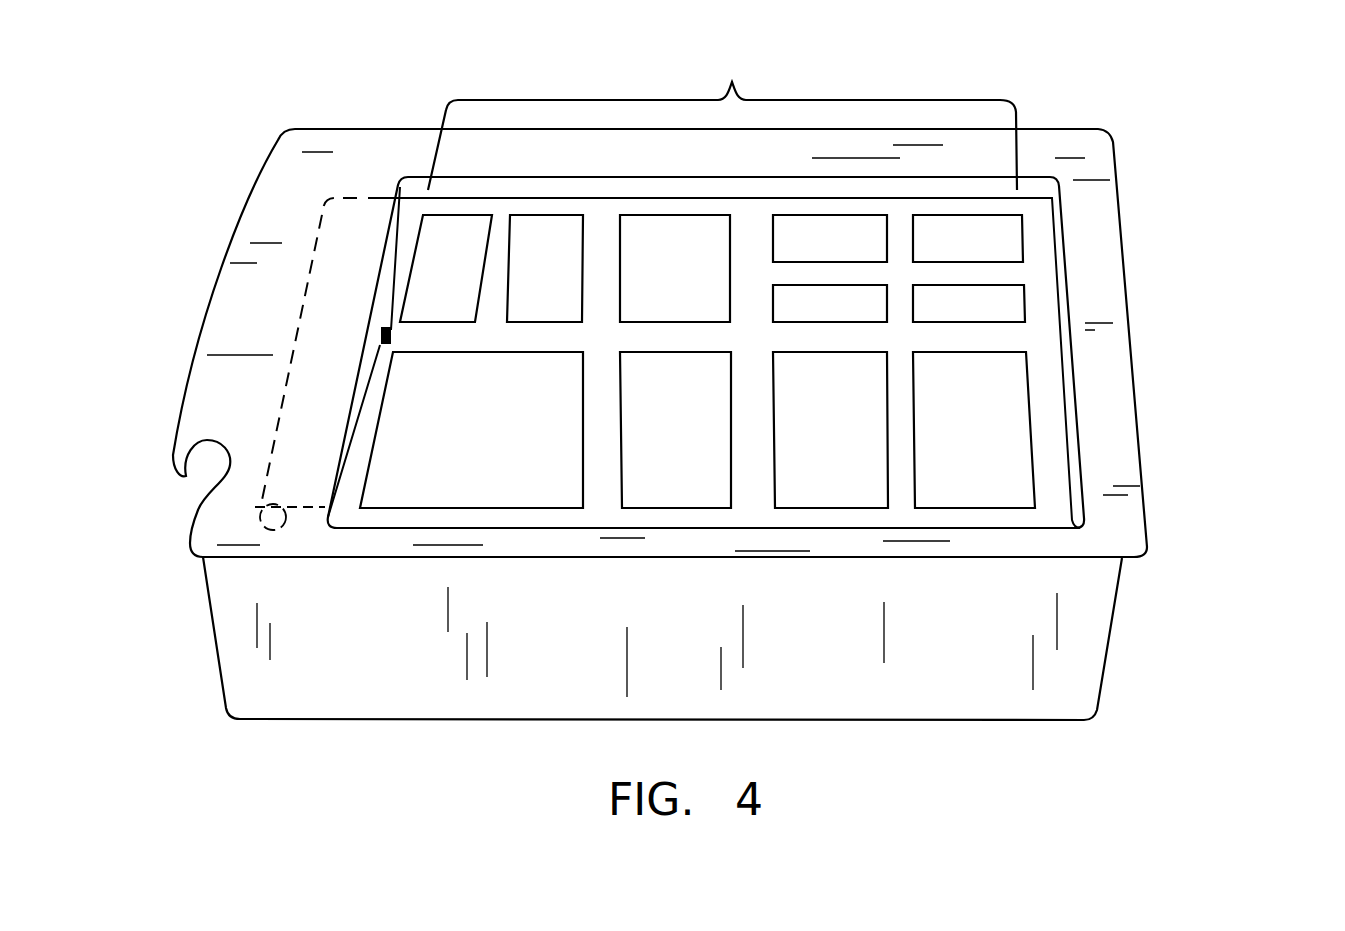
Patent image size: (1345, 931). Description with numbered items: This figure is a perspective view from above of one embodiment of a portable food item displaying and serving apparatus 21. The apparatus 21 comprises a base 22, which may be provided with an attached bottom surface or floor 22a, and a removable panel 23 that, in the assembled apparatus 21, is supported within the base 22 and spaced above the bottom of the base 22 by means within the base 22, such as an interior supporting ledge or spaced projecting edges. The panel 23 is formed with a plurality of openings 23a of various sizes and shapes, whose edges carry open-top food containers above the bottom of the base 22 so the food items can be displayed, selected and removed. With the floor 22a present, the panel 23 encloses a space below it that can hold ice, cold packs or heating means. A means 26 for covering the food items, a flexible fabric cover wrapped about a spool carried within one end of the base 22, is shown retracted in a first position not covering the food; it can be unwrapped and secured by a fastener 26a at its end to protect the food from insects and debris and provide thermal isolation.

The food item displaying and serving apparatus 21 is at (1210, 409).
The base 22 is at (193, 322).
The floor 22a is at (497, 750).
The panel 23 is at (1042, 323).
The openings 23a is at (722, 121).
The means for covering 26 is at (283, 392).
The fastener 26a is at (386, 330).